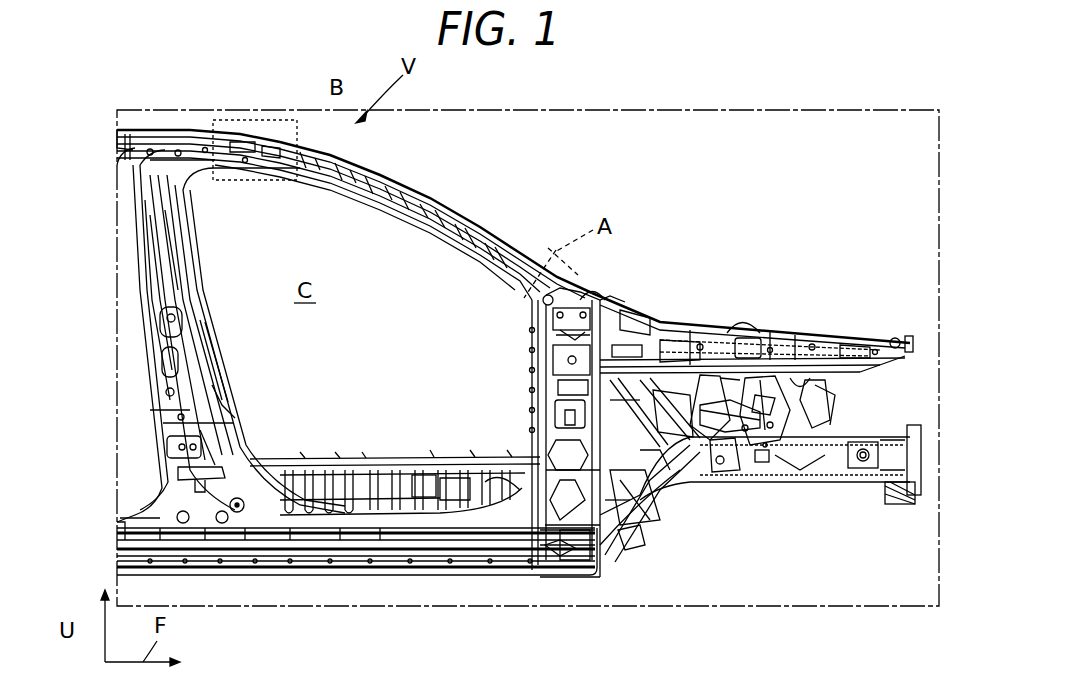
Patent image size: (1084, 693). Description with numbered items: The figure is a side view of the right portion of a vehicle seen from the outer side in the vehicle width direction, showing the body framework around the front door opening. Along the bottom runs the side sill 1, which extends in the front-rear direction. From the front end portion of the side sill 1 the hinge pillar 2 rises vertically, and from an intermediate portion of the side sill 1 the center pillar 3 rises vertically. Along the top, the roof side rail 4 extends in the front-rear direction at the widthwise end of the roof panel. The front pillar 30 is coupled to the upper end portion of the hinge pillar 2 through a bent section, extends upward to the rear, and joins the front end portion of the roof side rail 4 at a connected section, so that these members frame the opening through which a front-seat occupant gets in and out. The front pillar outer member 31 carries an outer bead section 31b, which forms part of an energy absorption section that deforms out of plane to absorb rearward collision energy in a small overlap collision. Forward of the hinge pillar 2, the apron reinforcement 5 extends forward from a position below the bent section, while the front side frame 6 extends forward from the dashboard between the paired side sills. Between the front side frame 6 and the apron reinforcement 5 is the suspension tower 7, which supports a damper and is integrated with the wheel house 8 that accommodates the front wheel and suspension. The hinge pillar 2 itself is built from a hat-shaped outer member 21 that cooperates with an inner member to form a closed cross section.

The side sill 1 is at (352, 562).
The hinge pillar 2 is at (399, 457).
The center pillar 3 is at (167, 293).
The roof side rail 4 is at (193, 132).
The apron reinforcement 5 is at (697, 346).
The front side frame 6 is at (821, 470).
The suspension tower 7 is at (731, 470).
The wheel house 8 is at (632, 512).
The outer member 21 is at (548, 452).
The front pillar 30 is at (436, 220).
The front pillar outer member 31 is at (421, 202).
The outer bead section 31b is at (523, 305).